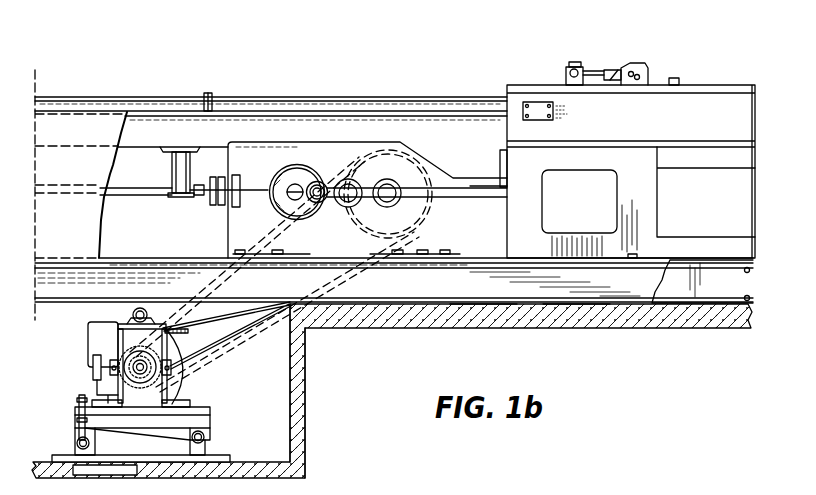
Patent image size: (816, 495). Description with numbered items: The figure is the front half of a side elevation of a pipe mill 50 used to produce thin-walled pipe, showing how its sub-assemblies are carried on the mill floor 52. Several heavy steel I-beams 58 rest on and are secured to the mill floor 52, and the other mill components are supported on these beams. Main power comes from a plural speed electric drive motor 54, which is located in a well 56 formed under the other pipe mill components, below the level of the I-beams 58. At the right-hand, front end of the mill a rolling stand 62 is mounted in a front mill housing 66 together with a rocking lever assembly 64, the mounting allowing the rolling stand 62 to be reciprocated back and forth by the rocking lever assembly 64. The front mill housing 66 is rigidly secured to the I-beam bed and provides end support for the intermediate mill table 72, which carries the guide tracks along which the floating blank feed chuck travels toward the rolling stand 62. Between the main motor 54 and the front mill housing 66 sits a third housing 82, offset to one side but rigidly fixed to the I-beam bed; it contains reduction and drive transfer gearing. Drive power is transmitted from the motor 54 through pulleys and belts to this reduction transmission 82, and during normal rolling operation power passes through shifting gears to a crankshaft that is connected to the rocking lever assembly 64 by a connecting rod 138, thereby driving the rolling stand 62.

The pipe mill 50 is at (189, 72).
The mill table 72 is at (367, 112).
The third housing 82 is at (235, 228).
The connecting rod 138 is at (483, 204).
The rocking lever assembly 64 is at (551, 77).
The rolling stand 62 is at (660, 69).
The I-beams 58 is at (62, 299).
The electric drive motor 54 is at (192, 387).
The well 56 is at (290, 425).
The mill floor 52 is at (421, 330).
The front mill housing 66 is at (641, 229).